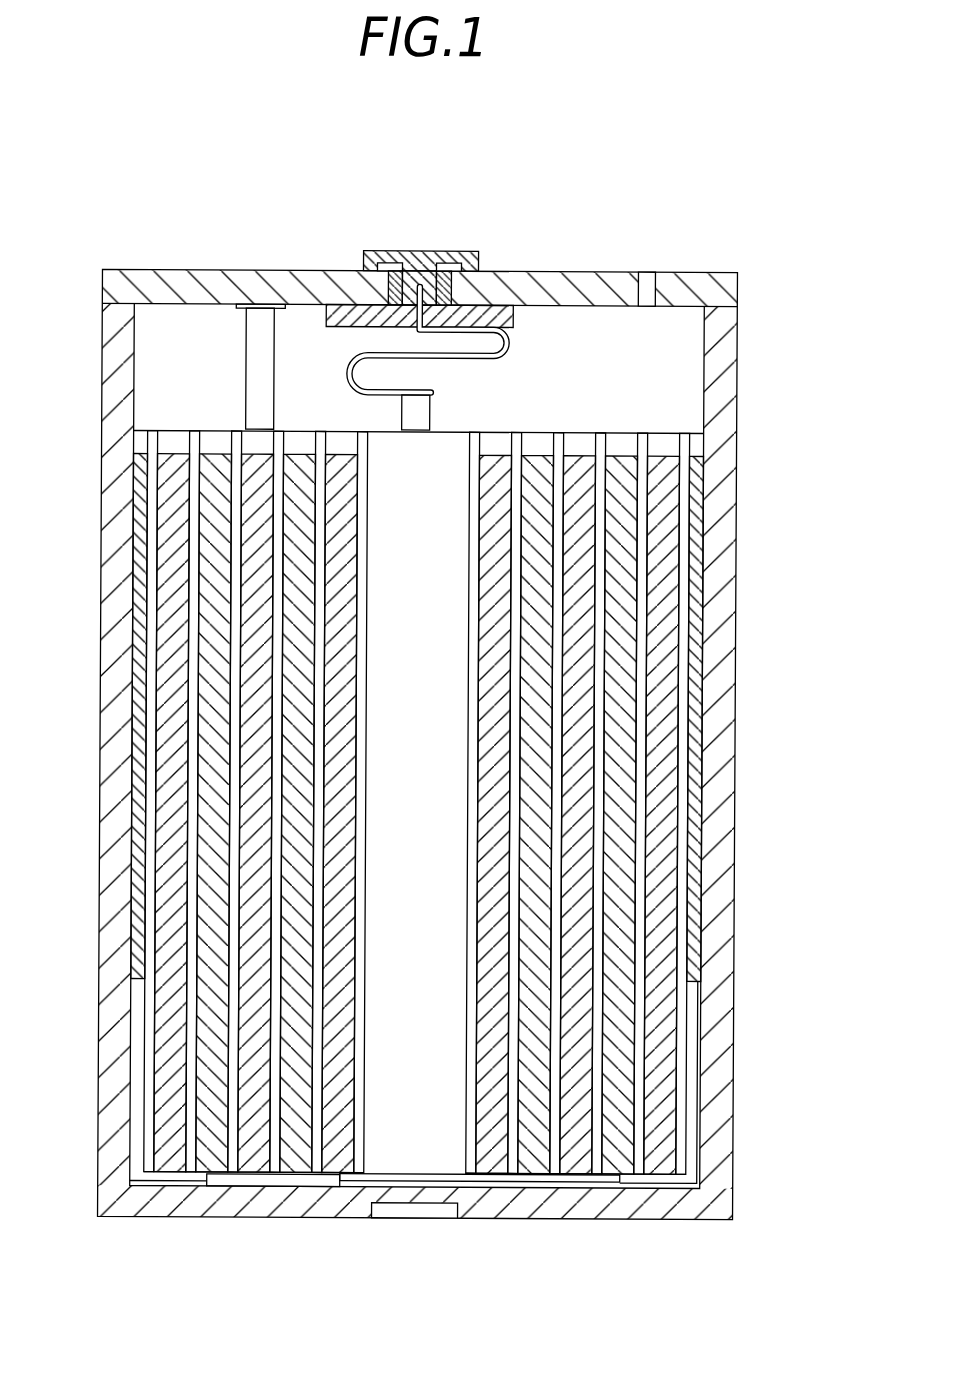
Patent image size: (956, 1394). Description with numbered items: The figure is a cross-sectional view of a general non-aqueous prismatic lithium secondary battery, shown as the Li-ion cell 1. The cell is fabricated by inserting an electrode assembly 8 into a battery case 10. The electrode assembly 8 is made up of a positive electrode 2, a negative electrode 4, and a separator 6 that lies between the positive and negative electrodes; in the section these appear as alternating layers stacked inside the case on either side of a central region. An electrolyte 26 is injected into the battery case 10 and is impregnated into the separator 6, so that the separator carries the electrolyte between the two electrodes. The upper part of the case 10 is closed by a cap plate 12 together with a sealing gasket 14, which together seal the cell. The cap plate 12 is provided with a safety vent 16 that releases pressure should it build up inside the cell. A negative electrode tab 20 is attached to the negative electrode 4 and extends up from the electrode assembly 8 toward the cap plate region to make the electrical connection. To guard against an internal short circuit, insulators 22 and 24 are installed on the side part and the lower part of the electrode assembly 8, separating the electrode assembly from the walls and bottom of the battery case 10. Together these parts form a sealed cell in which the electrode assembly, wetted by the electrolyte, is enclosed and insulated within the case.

The Li-ion cell 1 is at (806, 400).
The positive electrode 2 is at (657, 1028).
The negative electrode 4 is at (196, 1036).
The separator 6 is at (192, 1118).
The electrode assembly 8 is at (258, 362).
The battery case 10 is at (118, 432).
The cap plate 12 is at (547, 283).
The sealing gasket 14 is at (373, 252).
The safety vent 16 is at (651, 285).
The negative electrode tab 20 is at (510, 342).
The insulator 22 is at (128, 710).
The insulator 24 is at (275, 1187).
The electrolyte 26 is at (636, 1103).